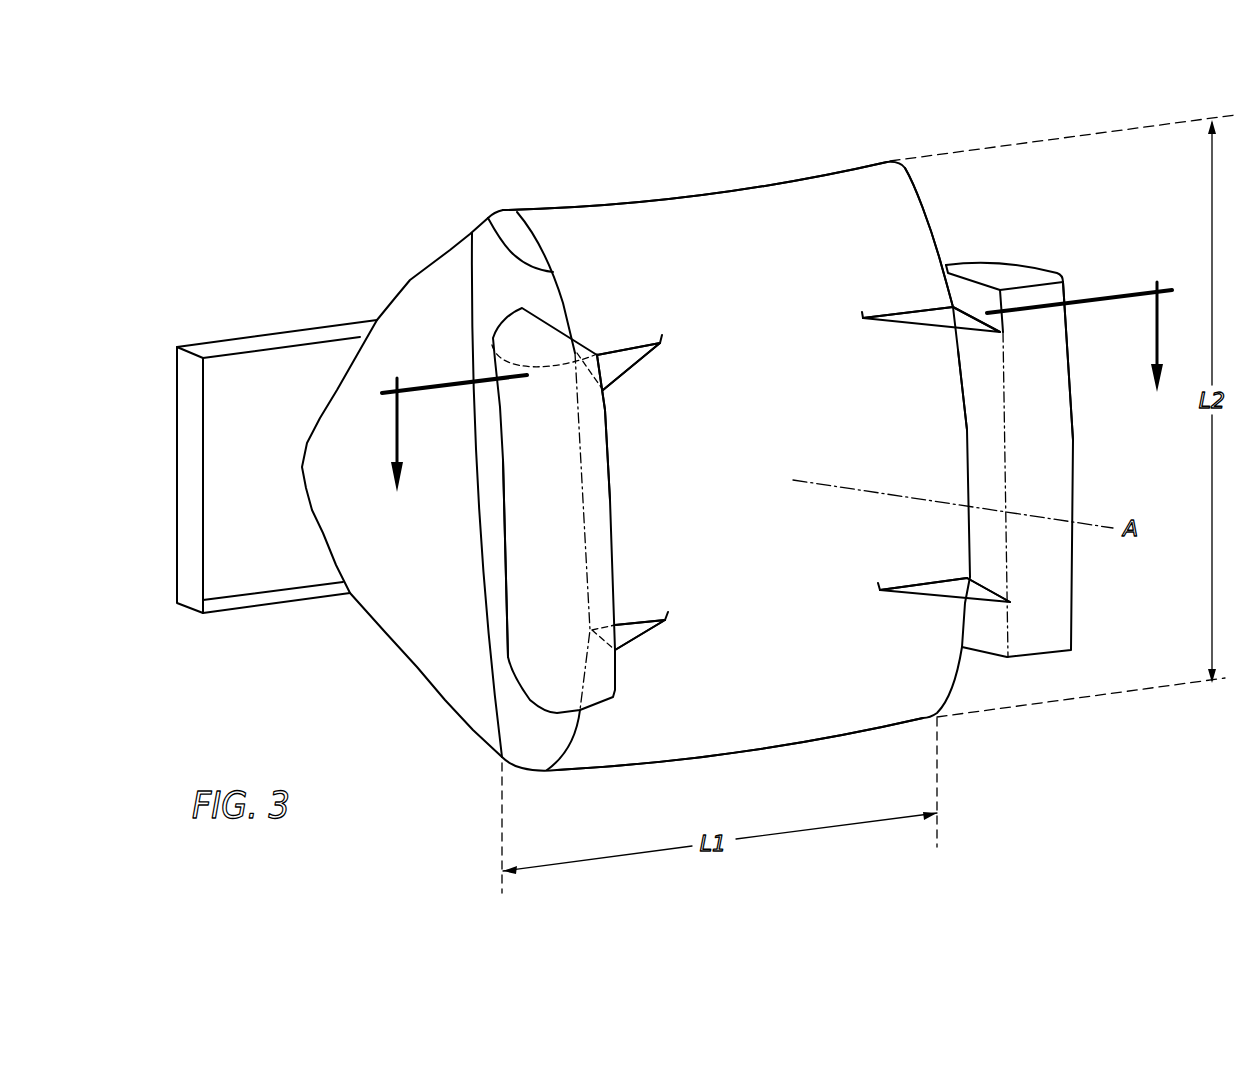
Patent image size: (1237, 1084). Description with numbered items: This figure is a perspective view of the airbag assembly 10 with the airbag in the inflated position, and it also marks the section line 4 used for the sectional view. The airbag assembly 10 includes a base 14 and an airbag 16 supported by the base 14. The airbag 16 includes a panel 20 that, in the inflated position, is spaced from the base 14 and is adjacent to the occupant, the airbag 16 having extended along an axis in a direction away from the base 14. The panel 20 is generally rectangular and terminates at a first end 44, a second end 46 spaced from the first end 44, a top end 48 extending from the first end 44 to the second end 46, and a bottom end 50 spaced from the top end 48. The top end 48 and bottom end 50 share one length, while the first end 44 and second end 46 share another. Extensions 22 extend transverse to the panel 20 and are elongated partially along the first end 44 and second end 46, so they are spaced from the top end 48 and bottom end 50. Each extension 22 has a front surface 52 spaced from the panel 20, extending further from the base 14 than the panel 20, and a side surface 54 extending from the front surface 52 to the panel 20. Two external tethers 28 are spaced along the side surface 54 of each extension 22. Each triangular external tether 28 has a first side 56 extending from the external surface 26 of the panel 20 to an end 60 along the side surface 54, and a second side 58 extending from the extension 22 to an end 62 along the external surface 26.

The airbag assembly 10 is at (284, 170).
The base 14 is at (226, 332).
The airbag 16 is at (407, 280).
The panel 20 is at (775, 200).
The extension 22 is at (498, 508).
The external surface 26 is at (737, 265).
The external tether 28 is at (626, 338).
The first end 44 is at (493, 227).
The second end 46 is at (927, 200).
The top end 48 is at (623, 202).
The bottom end 50 is at (708, 758).
The front surface 52 is at (544, 538).
The side surface 54 is at (600, 500).
The first side 56 is at (592, 378).
The second side 58 is at (607, 350).
The end 60 is at (603, 390).
The end 62 is at (662, 335).
The section line 4- 4 is at (776, 386).